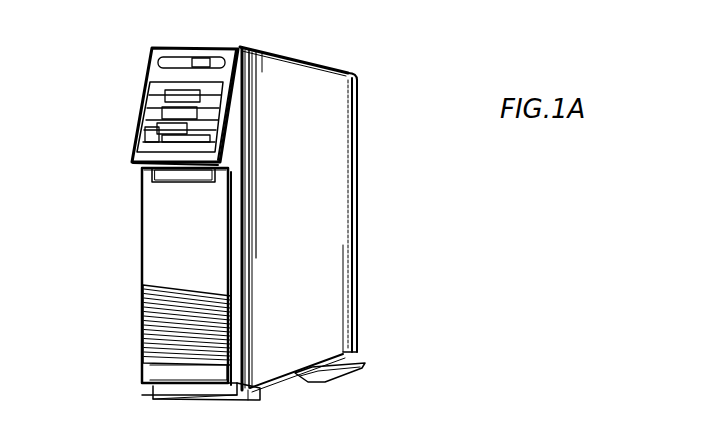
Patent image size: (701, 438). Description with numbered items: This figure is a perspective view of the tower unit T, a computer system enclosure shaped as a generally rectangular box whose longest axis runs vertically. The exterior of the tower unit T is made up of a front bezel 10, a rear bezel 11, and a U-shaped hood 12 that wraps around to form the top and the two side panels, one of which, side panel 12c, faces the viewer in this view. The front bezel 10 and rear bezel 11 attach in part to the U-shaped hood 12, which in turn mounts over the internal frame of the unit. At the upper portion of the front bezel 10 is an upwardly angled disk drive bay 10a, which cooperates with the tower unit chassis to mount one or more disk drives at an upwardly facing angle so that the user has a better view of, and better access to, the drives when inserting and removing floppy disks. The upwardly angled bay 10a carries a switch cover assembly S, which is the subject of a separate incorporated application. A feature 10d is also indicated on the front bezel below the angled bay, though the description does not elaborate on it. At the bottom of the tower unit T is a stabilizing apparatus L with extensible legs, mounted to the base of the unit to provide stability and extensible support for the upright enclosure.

The front bezel 10 is at (148, 229).
The upwardly angled disk drive bay 10a is at (143, 99).
The ledge recess below control panel 10d is at (134, 167).
The switch cover assembly S is at (158, 55).
The U-shaped hood 12 is at (300, 58).
The side panel 12c is at (311, 244).
The tower unit T is at (338, 82).
The rear bezel 11 is at (358, 183).
The stabilizing apparatus with extensible legs L is at (365, 358).